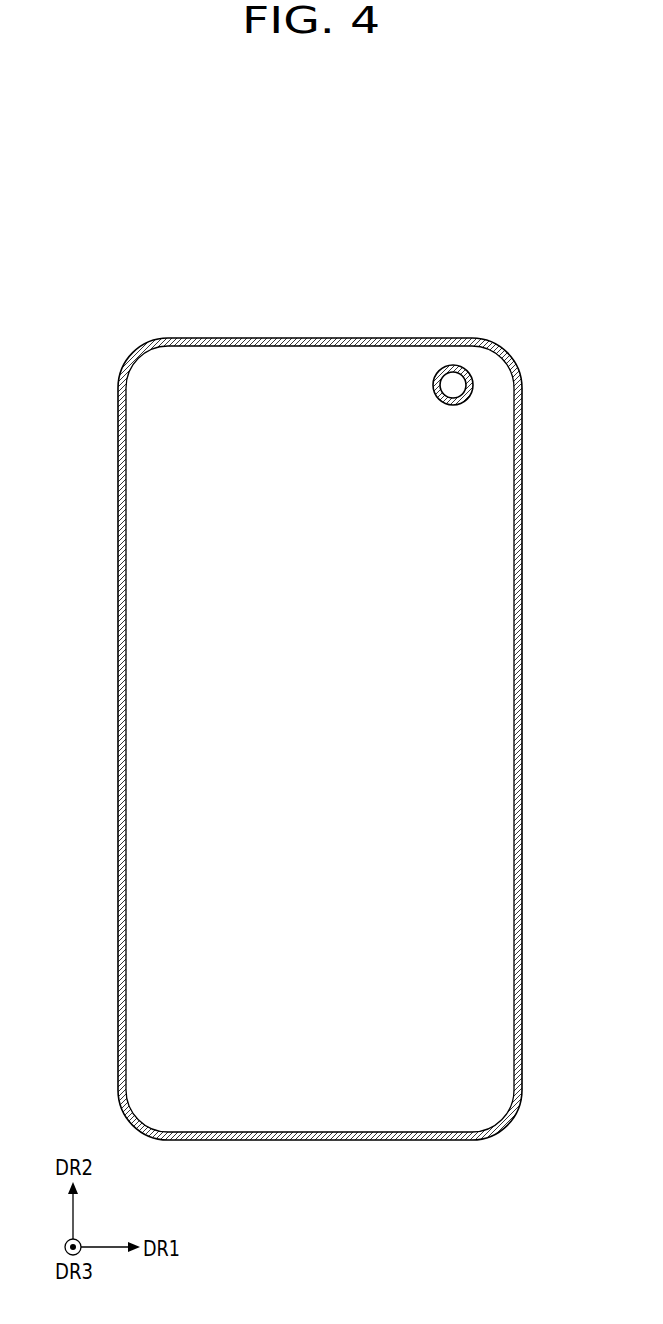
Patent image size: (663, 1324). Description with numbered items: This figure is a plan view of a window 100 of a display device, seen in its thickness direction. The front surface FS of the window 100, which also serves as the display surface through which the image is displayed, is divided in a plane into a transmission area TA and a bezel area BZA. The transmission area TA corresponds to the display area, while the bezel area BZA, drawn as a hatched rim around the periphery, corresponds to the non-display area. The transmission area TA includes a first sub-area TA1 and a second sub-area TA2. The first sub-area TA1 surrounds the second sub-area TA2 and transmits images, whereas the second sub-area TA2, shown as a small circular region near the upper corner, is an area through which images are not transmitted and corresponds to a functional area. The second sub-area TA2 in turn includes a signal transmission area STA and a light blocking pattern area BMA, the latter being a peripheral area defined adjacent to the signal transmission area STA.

The window 100 is at (158, 250).
The front surface FS is at (437, 162).
The bezel area BZA is at (270, 338).
The transmission area TA is at (510, 210).
The first sub-area TA1 is at (332, 374).
The second sub-area TA2 is at (533, 256).
The signal transmission area STA is at (445, 367).
The light blocking pattern area BMA is at (452, 382).